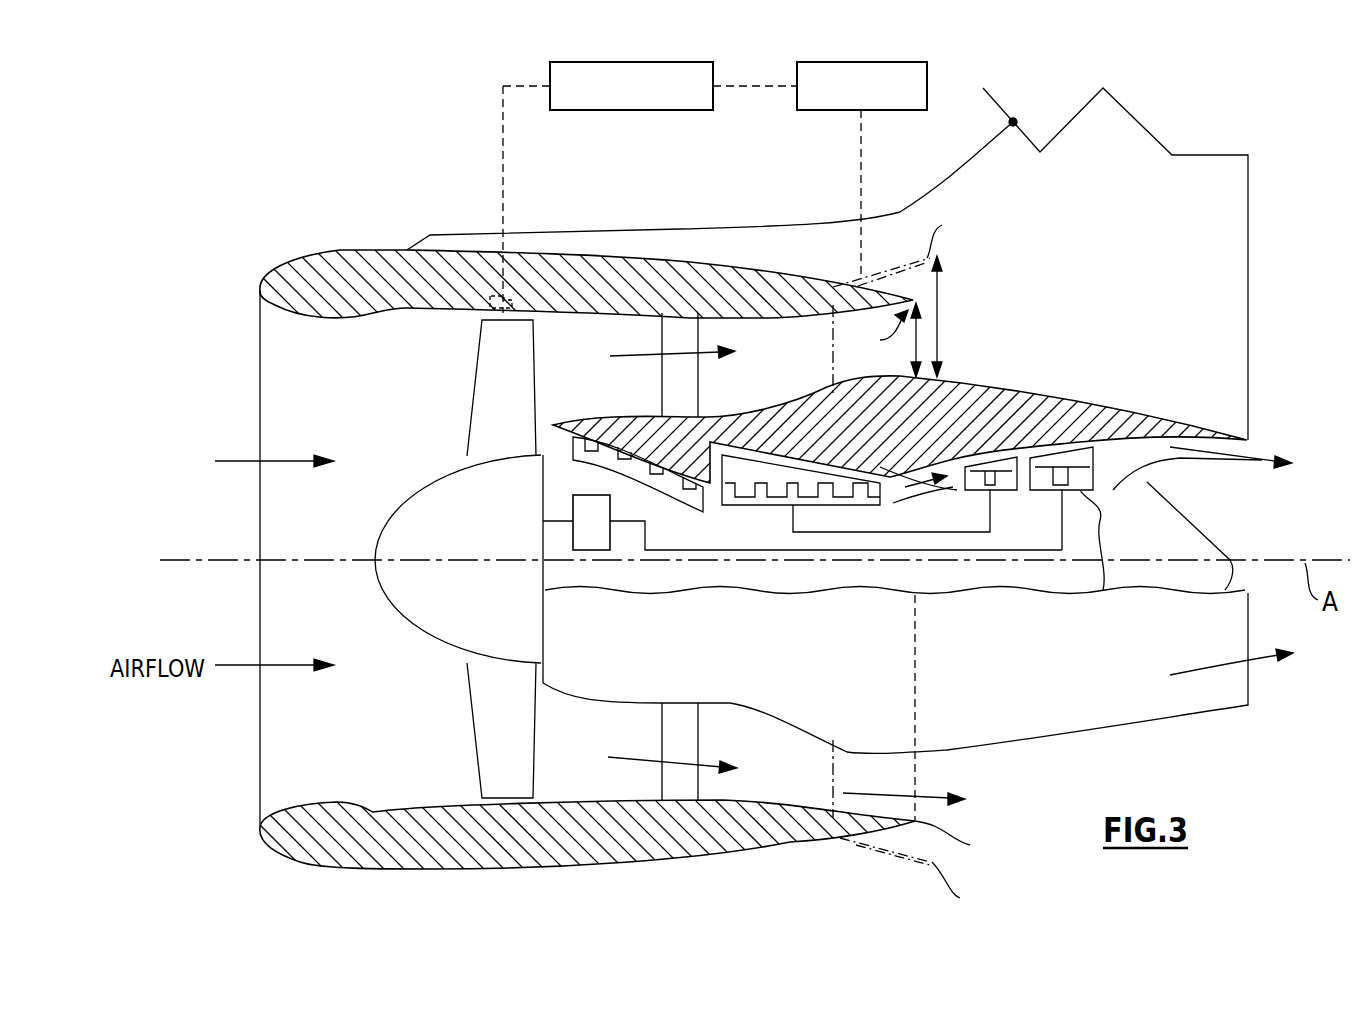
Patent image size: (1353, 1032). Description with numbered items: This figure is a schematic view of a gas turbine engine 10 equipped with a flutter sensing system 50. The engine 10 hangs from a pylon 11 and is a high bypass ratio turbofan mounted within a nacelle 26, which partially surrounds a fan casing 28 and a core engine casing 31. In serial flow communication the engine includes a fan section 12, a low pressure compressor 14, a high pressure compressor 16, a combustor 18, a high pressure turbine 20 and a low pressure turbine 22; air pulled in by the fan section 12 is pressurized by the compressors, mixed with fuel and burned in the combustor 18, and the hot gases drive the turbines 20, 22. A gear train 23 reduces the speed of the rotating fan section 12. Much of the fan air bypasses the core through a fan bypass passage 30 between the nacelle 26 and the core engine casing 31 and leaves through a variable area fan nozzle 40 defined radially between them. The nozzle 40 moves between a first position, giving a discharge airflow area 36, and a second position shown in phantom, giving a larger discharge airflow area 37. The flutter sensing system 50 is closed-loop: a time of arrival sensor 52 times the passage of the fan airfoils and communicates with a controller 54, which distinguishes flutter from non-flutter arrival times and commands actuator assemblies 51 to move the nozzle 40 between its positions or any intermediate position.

The gas turbine engine 10 is at (312, 198).
The pylon 11 is at (1143, 143).
The fan section 12 is at (474, 728).
The low pressure compressor 14 is at (673, 500).
The high pressure compressor 16 is at (760, 505).
The combustor 18 is at (933, 497).
The high pressure turbine 20 is at (1007, 490).
The low pressure turbine 22 is at (1097, 517).
The gear train 23 is at (590, 552).
The nacelle 26 is at (599, 240).
The fan casing 28 is at (640, 290).
The fan bypass passage 30 is at (767, 365).
The core engine casing 31 is at (1073, 410).
The discharge airflow area 36 is at (918, 338).
The discharge airflow area 37 is at (940, 297).
The variable area fan nozzle 40 is at (903, 230).
The flutter sensing system 50 is at (488, 54).
The actuator assemblies 51 is at (887, 62).
The sensor 52 is at (488, 300).
The controller 54 is at (617, 62).